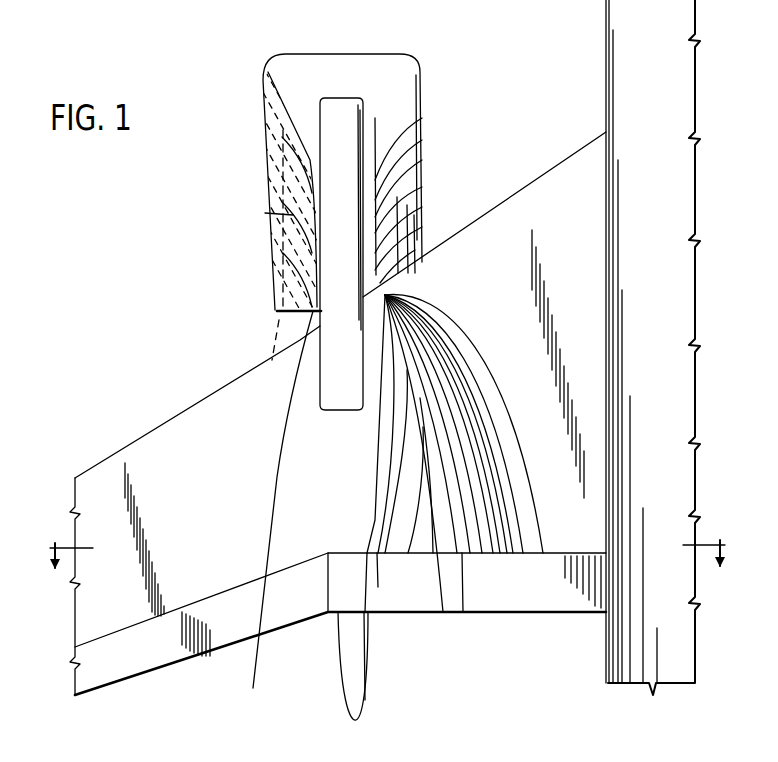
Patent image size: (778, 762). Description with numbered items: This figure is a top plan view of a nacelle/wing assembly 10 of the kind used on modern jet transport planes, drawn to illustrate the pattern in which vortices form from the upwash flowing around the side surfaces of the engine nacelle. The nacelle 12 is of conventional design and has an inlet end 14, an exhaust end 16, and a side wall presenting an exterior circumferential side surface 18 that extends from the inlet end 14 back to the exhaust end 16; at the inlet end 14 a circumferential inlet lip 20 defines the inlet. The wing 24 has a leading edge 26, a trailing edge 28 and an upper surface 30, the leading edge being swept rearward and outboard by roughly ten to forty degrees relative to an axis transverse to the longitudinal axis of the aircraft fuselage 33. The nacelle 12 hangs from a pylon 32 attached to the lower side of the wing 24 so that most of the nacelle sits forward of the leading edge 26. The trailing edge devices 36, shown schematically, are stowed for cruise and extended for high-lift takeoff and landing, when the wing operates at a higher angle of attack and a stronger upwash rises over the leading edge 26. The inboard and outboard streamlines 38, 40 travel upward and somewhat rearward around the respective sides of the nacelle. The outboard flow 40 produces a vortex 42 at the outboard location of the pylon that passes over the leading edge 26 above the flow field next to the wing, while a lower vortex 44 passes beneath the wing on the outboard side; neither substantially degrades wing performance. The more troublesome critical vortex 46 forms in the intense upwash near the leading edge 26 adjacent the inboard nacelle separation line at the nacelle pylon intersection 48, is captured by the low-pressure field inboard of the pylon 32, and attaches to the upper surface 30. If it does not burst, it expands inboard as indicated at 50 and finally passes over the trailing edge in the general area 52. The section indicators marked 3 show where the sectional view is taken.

The nacelle/wing assembly 10 is at (151, 297).
The nacelle 12 is at (256, 83).
The inlet end 14 is at (283, 56).
The exhaust end 16 is at (283, 309).
The exterior circumferential side surface 18 is at (265, 234).
The circumferential inlet lip 20 is at (383, 54).
The wing 24 is at (168, 409).
The leading edge 26 is at (500, 207).
The trailing edge 28 is at (224, 648).
The upper surface 30 is at (193, 534).
The pylon 32 is at (335, 297).
The aircraft fuselage 33 is at (605, 82).
The trailing edge devices 36 is at (158, 660).
The inboard streamlines 38 is at (425, 195).
The outboard streamlines 40 is at (295, 173).
The vortex 42 is at (296, 385).
The lower vortex 44 is at (277, 334).
The critical vortex 46 is at (387, 296).
The nacelle pylon intersection 48 is at (367, 268).
The inboard expansion of the vortex 50 is at (478, 347).
The trailing edge passage area 52 is at (522, 580).
The section line 3- 3 is at (388, 546).